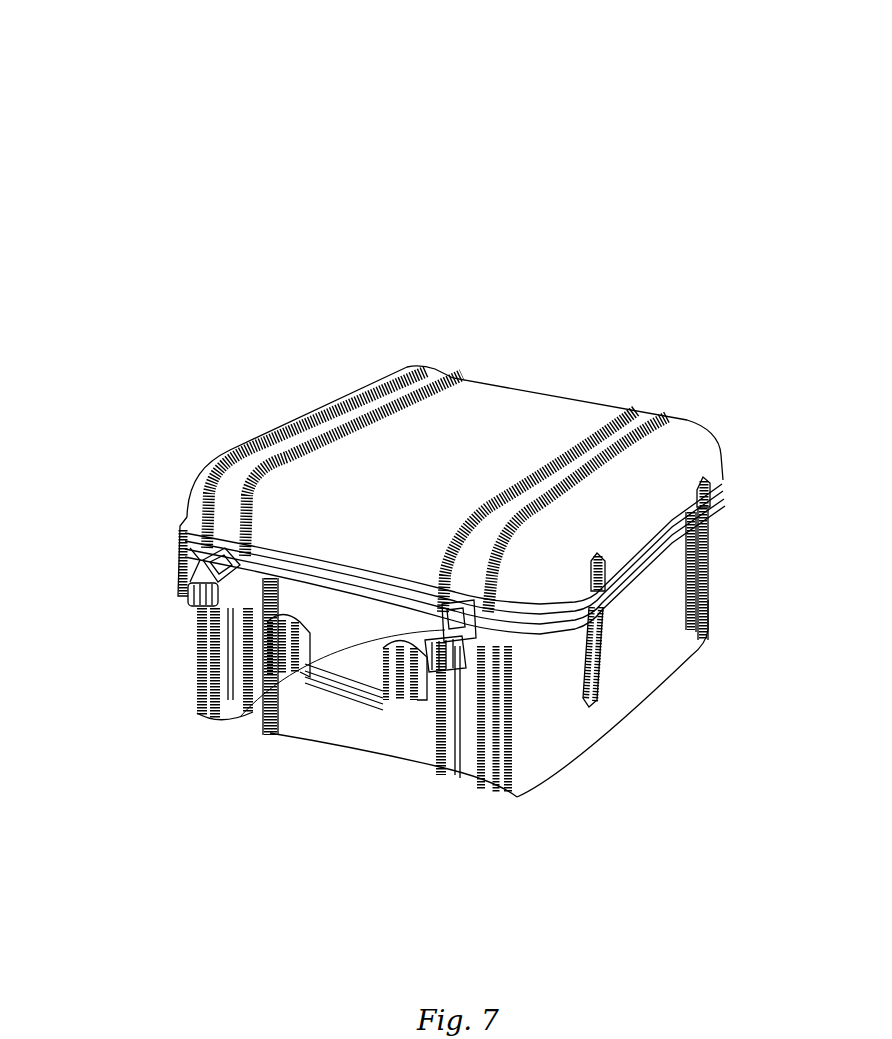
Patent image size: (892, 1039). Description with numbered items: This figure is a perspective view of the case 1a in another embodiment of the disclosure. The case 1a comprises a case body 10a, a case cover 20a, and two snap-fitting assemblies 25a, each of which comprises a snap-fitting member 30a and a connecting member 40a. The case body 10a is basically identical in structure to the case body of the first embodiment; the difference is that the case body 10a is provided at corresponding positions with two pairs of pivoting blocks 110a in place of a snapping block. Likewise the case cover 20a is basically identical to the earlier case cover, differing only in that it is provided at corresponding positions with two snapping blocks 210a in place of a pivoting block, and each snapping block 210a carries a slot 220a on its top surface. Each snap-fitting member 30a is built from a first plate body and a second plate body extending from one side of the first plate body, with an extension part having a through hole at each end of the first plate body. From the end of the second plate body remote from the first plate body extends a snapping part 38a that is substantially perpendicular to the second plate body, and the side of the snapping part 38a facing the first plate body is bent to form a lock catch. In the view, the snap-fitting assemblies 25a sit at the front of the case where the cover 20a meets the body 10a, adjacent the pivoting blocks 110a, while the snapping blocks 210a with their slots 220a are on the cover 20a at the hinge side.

The case 1a is at (456, 62).
The case cover 20a is at (492, 421).
The slot 220a is at (487, 603).
The snapping block 210a is at (603, 613).
The case body 10a is at (567, 730).
The pivoting block 110a is at (248, 707).
The snap-fitting assembly 25a is at (180, 598).
The snap-fitting member 30a is at (452, 700).
The connecting member 40a is at (450, 655).
The snapping part 38a is at (447, 670).